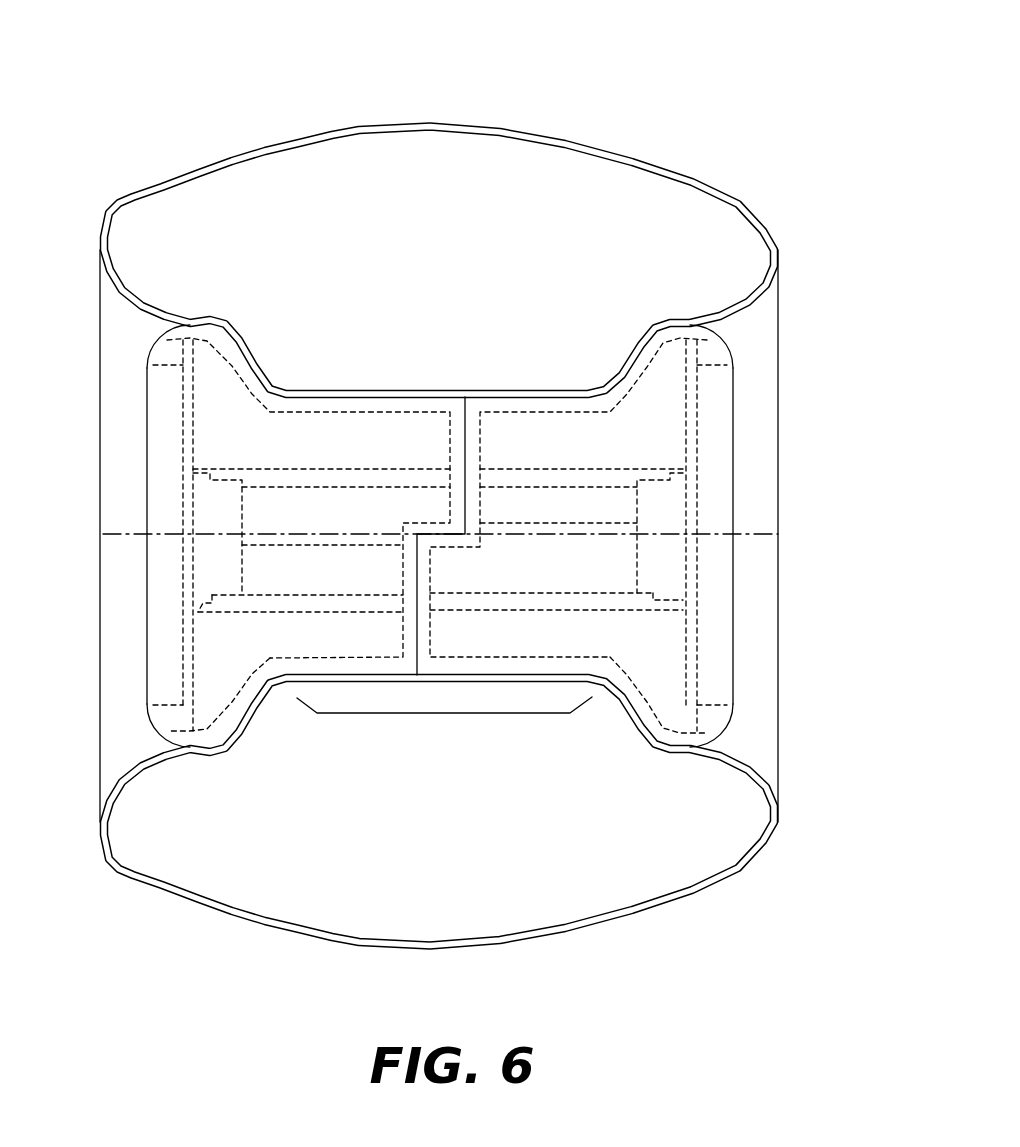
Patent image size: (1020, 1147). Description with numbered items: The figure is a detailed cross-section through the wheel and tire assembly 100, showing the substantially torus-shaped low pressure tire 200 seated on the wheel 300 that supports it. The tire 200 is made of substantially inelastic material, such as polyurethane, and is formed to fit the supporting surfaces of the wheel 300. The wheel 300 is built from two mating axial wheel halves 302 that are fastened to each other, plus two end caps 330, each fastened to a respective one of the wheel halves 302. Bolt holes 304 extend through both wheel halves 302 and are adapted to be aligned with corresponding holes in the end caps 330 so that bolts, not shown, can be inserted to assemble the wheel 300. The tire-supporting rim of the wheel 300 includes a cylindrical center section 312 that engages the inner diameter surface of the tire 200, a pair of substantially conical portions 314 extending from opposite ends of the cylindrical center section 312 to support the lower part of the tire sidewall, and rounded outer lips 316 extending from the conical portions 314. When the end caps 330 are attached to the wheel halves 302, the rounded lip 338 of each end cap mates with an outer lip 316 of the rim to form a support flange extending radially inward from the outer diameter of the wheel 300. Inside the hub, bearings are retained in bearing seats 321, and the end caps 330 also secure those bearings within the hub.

The wheel and tire assembly 100 is at (562, 100).
The low pressure tire 200 is at (684, 172).
The wheel 300 is at (781, 499).
The wheel halves 302 is at (338, 418).
The bolt holes 304 is at (355, 482).
The cylindrical center section 312 is at (451, 713).
The conical portions 314 is at (247, 705).
The rounded outer lips 316 is at (216, 338).
The bearing seats 321 is at (680, 558).
The end caps 330 is at (180, 405).
The rounded lip 338 is at (725, 346).